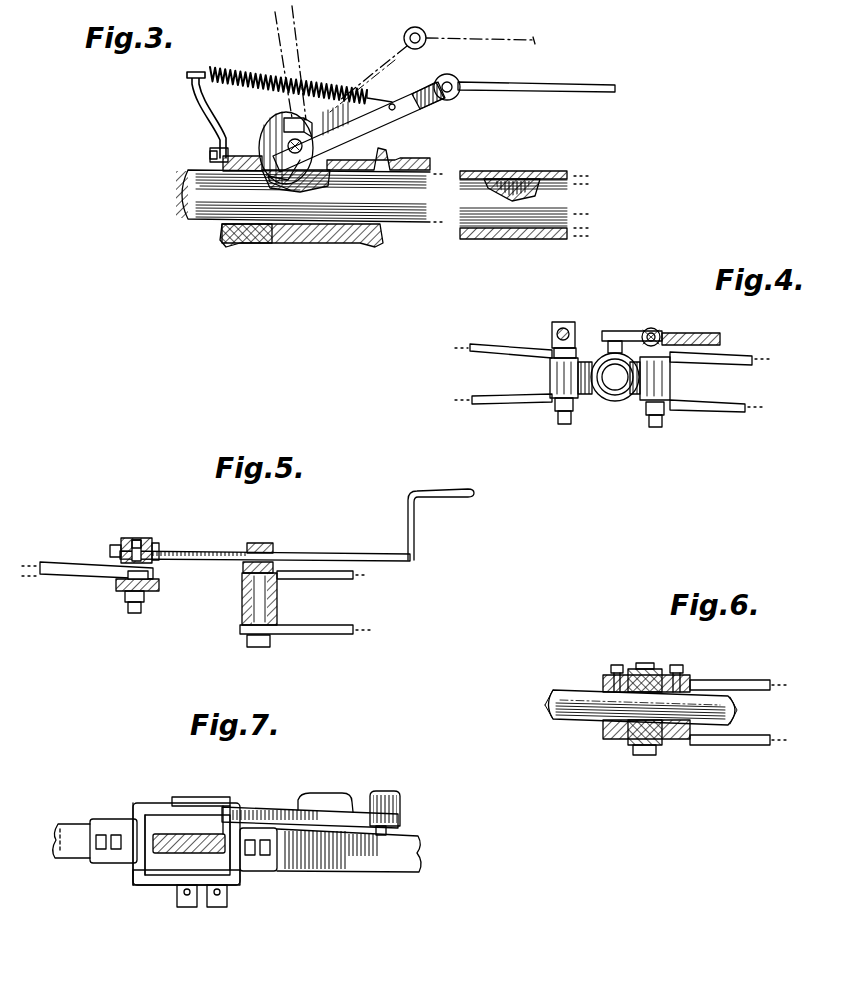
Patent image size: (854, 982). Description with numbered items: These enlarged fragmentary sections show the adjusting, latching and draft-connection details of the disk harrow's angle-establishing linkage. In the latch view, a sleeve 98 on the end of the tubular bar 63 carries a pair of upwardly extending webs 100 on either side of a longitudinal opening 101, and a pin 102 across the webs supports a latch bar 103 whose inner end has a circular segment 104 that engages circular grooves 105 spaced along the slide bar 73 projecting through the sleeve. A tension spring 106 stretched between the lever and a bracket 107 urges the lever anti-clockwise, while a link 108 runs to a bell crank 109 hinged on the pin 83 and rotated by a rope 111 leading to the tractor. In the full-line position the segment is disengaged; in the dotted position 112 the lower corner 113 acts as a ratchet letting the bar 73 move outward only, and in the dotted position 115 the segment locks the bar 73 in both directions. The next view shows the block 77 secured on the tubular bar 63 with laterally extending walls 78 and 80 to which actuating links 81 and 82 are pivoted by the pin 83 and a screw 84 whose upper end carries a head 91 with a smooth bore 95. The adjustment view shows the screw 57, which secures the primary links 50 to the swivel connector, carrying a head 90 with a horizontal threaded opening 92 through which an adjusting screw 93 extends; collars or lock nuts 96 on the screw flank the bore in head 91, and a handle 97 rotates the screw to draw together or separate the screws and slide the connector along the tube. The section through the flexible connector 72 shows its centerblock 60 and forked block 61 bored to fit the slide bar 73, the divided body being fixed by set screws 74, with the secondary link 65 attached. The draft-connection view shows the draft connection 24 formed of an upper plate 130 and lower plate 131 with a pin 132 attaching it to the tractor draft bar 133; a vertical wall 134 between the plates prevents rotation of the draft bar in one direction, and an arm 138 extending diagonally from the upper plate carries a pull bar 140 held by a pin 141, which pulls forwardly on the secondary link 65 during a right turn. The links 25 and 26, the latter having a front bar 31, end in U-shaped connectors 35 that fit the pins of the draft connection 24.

In FIG. 7, the draft connection 24 is at (207, 800).
In FIG. 7, the link 25 is at (395, 848).
In FIG. 7, the link 26 is at (80, 820).
In FIG. 7, the front bar 31 is at (76, 850).
In FIG. 7, the U-shaped connector 35 is at (108, 819).
In FIG. 5, the primary link 50 is at (322, 625).
In FIG. 5, the screw 57 is at (279, 602).
In FIG. 6, the centerblock 60 is at (640, 755).
In FIG. 6, the forked block 61 is at (605, 680).
In FIG. 3, the tubular bar 63 is at (508, 176).
In FIG. 4, the tubular bar 63 is at (616, 402).
In FIG. 6, the link 65 is at (705, 735).
In FIG. 6, the flexible connector 72 is at (647, 655).
In FIG. 3, the slide bar 73 is at (396, 222).
In FIG. 6, the slide bar 73 is at (570, 720).
In FIG. 6, the set screw 74 is at (616, 665).
In FIG. 4, the block 77 is at (558, 406).
In FIG. 4, the wall 78 is at (672, 380).
In FIG. 4, the wall 80 is at (550, 378).
In FIG. 5, the wall 80 is at (124, 592).
In FIG. 4, the actuating link 81 is at (735, 404).
In FIG. 4, the actuating link 82 is at (508, 396).
In FIG. 5, the actuating link 82 is at (95, 575).
In FIG. 4, the pin 83 is at (658, 427).
In FIG. 4, the screw 84 is at (570, 322).
In FIG. 5, the screw 84 is at (160, 586).
In FIG. 5, the head 90 is at (258, 543).
In FIG. 5, the head 91 is at (146, 537).
In FIG. 5, the threaded opening 92 is at (276, 553).
In FIG. 4, the adjusting screw 93 is at (556, 333).
In FIG. 5, the adjusting screw 93 is at (330, 553).
In FIG. 5, the smooth bore 95 is at (135, 538).
In FIG. 5, the lock nut 96 is at (112, 548).
In FIG. 5, the handle 97 is at (416, 525).
In FIG. 3, the sleeve 98 is at (300, 244).
In FIG. 3, the web 100 is at (304, 117).
In FIG. 3, the longitudinal opening 101 is at (330, 160).
In FIG. 3, the pin 102 is at (276, 132).
In FIG. 3, the latch bar 103 is at (432, 84).
In FIG. 3, the circular segment 104 is at (220, 148).
In FIG. 3, the circular groove 105 is at (300, 176).
In FIG. 3, the tension spring 106 is at (256, 72).
In FIG. 3, the bracket 107 is at (200, 106).
In FIG. 3, the link 108 is at (590, 86).
In FIG. 4, the link 108 is at (616, 329).
In FIG. 4, the bell crank 109 is at (648, 328).
In FIG. 4, the rope 111 is at (700, 340).
In FIG. 3, the dotted line position 112 is at (407, 32).
In FIG. 3, the lower corner 113 is at (258, 245).
In FIG. 3, the dotted line position 115 is at (296, 30).
In FIG. 7, the upper plate 130 is at (152, 803).
In FIG. 7, the lower plate 131 is at (155, 885).
In FIG. 7, the pin 132 is at (210, 900).
In FIG. 7, the draft bar 133 is at (215, 834).
In FIG. 7, the vertical wall 134 is at (140, 850).
In FIG. 7, the arm 138 is at (330, 868).
In FIG. 7, the pull bar 140 is at (325, 806).
In FIG. 7, the pin 141 is at (388, 792).